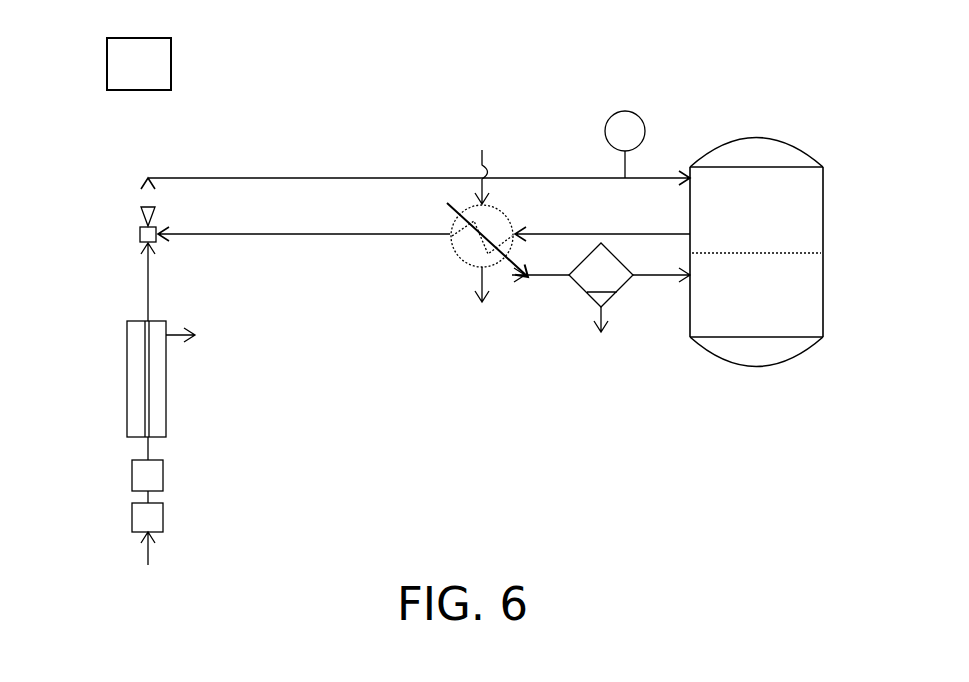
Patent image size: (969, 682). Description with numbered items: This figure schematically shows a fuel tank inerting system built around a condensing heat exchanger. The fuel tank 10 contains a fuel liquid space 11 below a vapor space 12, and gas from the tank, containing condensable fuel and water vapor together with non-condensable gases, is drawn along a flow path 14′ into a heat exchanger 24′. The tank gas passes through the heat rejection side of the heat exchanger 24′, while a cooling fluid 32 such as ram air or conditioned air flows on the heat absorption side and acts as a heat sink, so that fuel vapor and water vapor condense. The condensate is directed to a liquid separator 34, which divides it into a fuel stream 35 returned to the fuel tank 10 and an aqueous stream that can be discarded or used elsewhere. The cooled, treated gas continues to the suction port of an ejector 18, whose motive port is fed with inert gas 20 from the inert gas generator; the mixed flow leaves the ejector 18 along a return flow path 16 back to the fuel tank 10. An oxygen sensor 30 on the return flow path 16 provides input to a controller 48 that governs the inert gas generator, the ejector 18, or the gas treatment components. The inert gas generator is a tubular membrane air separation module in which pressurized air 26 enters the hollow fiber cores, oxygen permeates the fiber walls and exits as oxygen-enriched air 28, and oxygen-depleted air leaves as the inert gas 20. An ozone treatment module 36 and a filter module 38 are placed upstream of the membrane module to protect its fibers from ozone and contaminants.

The fuel tank 10 is at (689, 290).
The fuel liquid space 11 is at (812, 292).
The vapor space 12 is at (810, 214).
The flow path 14′ is at (593, 218).
The return flow path 16 is at (447, 178).
The ejector 18 is at (137, 222).
The inert gas 20 is at (145, 278).
The heat exchanger 24′ is at (467, 265).
The air 26 is at (145, 555).
The oxygen-enriched air 28 is at (173, 340).
The oxygen sensor 30 is at (619, 110).
The cooling fluid 32 is at (483, 156).
The liquid separator 34 is at (572, 288).
The fuel stream 35 is at (652, 276).
The ozone treatment module 36 is at (132, 515).
The filter module 38 is at (600, 310).
The controller 48 is at (171, 64).